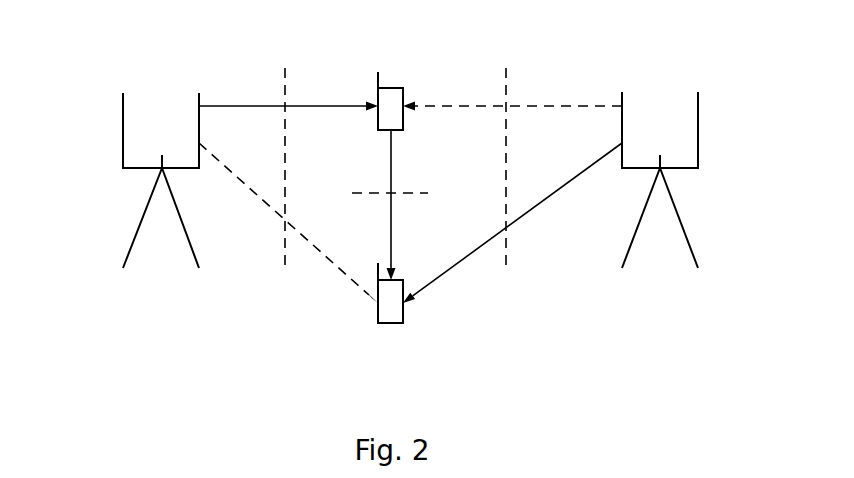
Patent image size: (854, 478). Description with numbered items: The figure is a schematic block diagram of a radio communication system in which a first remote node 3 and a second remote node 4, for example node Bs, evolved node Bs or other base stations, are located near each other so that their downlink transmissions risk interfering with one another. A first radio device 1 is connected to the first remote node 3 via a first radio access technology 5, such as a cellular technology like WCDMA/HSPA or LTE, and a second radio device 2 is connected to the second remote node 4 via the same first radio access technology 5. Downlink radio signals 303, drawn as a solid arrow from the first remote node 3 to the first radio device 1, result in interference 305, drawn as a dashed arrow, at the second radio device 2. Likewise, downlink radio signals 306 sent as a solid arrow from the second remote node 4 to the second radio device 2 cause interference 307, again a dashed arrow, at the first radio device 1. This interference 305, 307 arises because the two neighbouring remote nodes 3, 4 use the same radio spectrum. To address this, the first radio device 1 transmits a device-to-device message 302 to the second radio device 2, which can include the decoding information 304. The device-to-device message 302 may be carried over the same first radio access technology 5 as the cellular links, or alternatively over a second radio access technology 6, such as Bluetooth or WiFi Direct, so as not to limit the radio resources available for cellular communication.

The first radio device 1 is at (403, 80).
The second radio device 2 is at (398, 323).
The first remote node 3 is at (123, 134).
The second remote node 4 is at (698, 138).
The first radio access technology 5 is at (277, 61).
The second radio access technology 6 is at (446, 195).
The D2D message 302 is at (387, 208).
The DL radio signals 303 is at (264, 101).
The decoding information 304 is at (387, 140).
The interference 305 is at (297, 288).
The DL radio signals 306 is at (446, 293).
The interference 307 is at (574, 139).